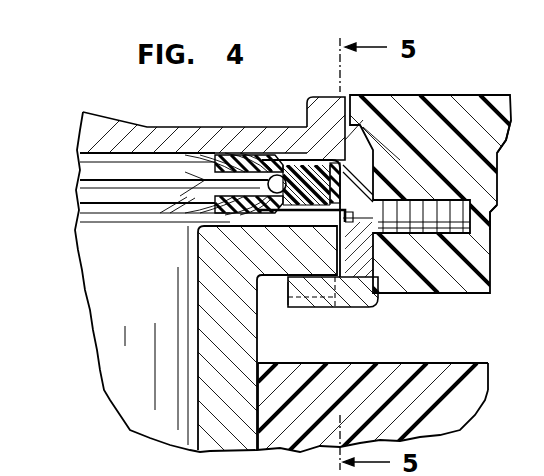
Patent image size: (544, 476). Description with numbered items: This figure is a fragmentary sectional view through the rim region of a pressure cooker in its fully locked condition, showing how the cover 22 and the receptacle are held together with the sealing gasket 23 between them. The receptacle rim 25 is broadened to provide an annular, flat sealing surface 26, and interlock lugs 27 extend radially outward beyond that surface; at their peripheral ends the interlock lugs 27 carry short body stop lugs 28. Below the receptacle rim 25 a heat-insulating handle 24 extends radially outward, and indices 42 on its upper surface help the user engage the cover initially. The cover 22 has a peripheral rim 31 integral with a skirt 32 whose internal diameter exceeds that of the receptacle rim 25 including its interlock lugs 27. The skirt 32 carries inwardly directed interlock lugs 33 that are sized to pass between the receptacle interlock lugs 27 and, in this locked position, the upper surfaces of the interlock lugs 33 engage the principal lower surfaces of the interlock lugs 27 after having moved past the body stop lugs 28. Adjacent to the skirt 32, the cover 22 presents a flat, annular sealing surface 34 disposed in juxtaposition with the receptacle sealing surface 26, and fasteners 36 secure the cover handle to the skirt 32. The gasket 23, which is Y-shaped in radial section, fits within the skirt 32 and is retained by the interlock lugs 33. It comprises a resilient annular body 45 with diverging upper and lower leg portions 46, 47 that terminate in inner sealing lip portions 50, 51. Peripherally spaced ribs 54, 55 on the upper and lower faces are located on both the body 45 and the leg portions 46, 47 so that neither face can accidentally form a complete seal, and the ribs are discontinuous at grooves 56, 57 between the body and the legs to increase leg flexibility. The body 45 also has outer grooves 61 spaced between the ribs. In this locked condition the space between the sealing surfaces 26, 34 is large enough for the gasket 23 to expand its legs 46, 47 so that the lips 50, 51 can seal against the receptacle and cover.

The cover 22 is at (107, 118).
The sealing gasket 23 is at (117, 218).
The handles 24 is at (493, 372).
The receptacle rim 25 is at (198, 280).
The sealing surface 26 is at (153, 213).
The interlock lugs 27 is at (320, 300).
The body stop lugs 28 is at (278, 302).
The peripheral rim 31 is at (370, 117).
The skirt 32 is at (496, 154).
The interlock lugs 33 is at (336, 310).
The sealing surface 34 is at (293, 163).
The fasteners 36 is at (490, 218).
The indices 42 is at (430, 363).
The annular body 45 is at (317, 165).
The upper leg portion 46 is at (238, 157).
The lower leg portion 47 is at (230, 217).
The lip portion 50 is at (217, 157).
The lip portion 51 is at (196, 224).
The ribs 54 is at (255, 157).
The ribs 55 is at (261, 217).
The groove 56 is at (277, 174).
The groove 57 is at (281, 212).
The outer grooves 61 is at (378, 175).